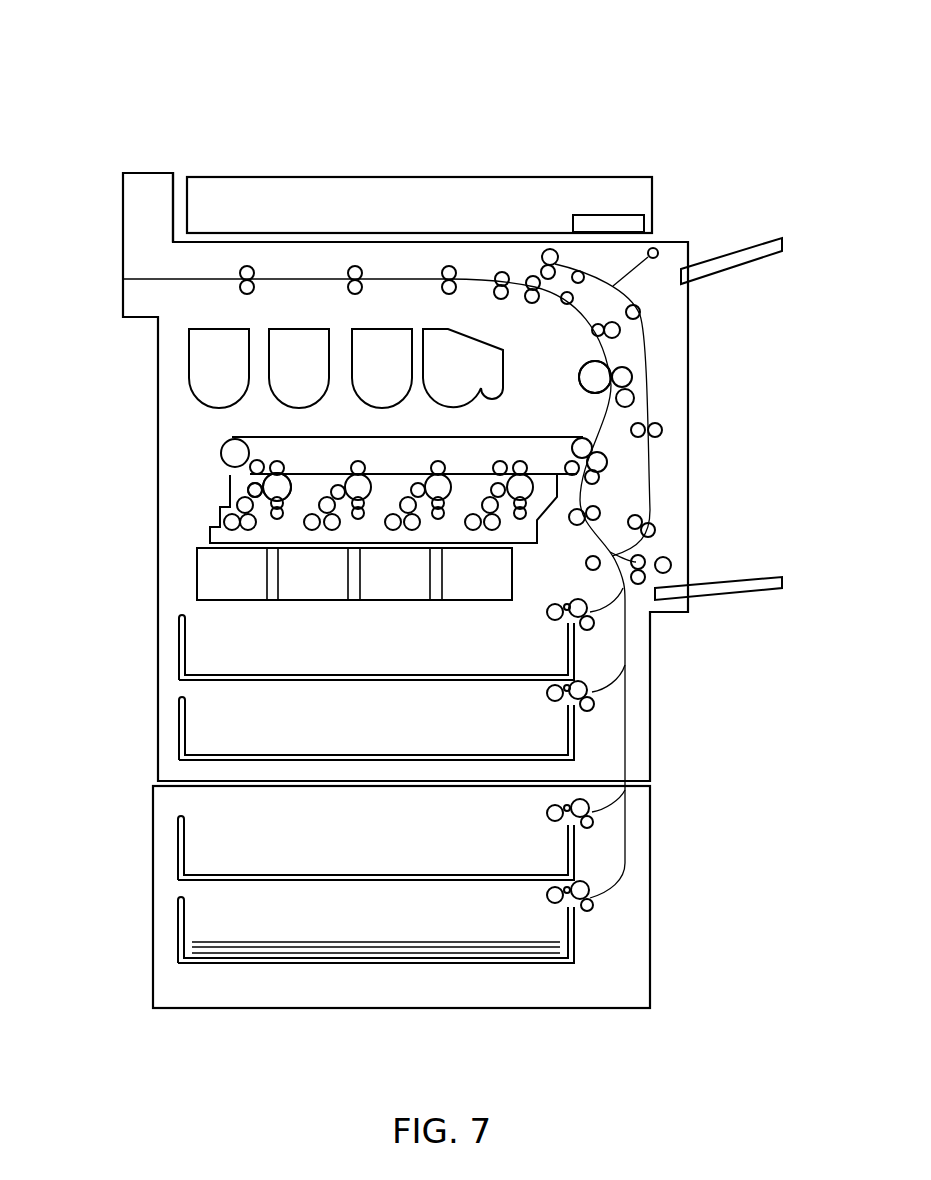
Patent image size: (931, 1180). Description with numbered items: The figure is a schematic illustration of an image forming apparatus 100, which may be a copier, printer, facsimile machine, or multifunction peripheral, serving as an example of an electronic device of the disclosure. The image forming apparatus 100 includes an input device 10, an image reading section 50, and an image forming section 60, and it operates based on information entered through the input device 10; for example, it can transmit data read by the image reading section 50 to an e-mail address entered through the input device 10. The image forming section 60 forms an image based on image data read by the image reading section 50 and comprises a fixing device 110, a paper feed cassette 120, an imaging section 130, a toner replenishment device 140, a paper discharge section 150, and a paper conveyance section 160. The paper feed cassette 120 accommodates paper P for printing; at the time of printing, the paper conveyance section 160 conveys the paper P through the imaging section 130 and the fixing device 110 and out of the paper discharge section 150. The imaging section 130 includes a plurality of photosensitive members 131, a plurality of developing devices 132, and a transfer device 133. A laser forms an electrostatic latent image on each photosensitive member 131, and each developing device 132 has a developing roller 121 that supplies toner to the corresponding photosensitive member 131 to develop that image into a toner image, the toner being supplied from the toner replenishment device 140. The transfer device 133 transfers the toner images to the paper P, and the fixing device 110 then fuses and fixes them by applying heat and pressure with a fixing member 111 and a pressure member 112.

The image forming apparatus 100 is at (490, 100).
The image reading section 50 is at (567, 168).
The input device 10 is at (645, 222).
The paper discharge section 150 is at (140, 228).
The paper conveyance section 160 is at (315, 262).
The image forming section 60 is at (735, 495).
The toner replenishment device 140 is at (180, 398).
The imaging section 130 is at (97, 460).
The transfer device 133 is at (212, 453).
The developing device 132 is at (217, 508).
The photosensitive member 131 is at (291, 483).
The developing roller 121 is at (248, 491).
The fixing device 110 is at (575, 396).
The fixing member 111 is at (594, 393).
The pressure member 112 is at (632, 377).
The paper feed cassette 120 is at (172, 731).
The paper P is at (228, 952).